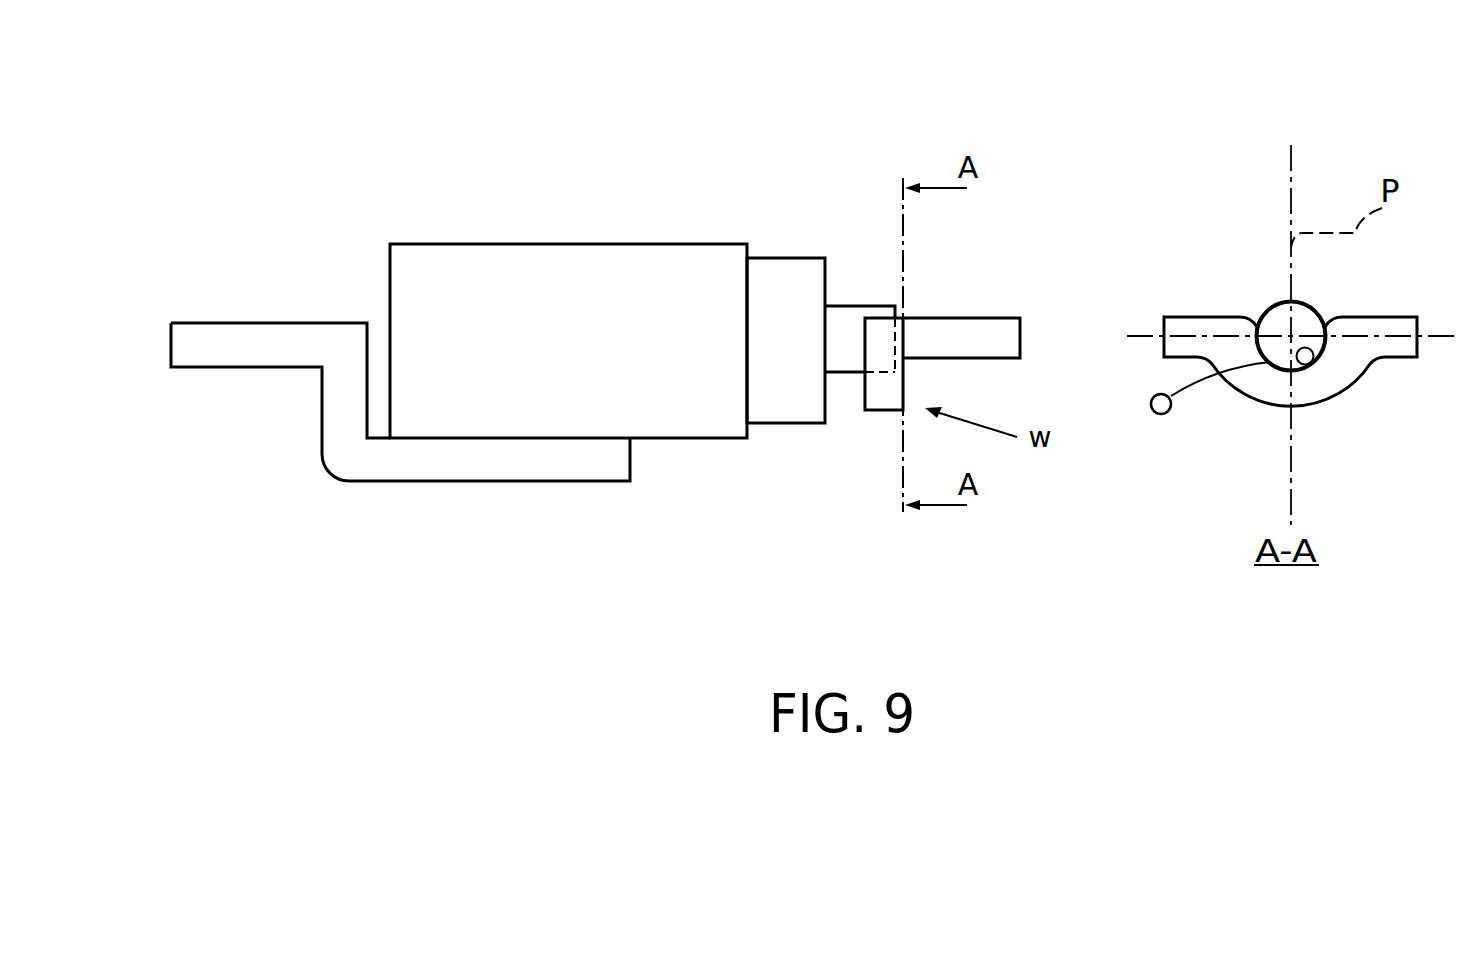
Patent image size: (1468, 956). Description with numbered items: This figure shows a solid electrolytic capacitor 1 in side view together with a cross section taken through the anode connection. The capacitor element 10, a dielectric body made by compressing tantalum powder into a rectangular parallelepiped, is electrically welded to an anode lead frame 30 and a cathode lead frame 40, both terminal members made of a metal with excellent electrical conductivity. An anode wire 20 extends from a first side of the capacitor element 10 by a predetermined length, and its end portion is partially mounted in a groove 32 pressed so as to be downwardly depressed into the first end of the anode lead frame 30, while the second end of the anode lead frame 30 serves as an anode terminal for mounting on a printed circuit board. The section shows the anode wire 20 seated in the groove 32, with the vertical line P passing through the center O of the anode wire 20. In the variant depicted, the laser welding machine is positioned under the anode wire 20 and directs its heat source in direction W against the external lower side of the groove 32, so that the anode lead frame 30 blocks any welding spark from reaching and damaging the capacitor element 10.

The solid electrolytic capacitor 1 is at (968, 138).
The capacitor element 10 is at (672, 413).
The anode wire 20 is at (842, 365).
The anode lead frame 30 is at (1010, 340).
The groove 32 is at (1317, 359).
The cathode lead frame 40 is at (362, 475).